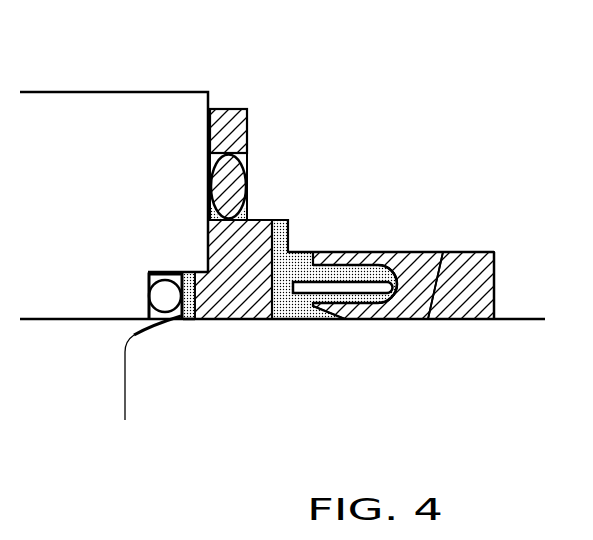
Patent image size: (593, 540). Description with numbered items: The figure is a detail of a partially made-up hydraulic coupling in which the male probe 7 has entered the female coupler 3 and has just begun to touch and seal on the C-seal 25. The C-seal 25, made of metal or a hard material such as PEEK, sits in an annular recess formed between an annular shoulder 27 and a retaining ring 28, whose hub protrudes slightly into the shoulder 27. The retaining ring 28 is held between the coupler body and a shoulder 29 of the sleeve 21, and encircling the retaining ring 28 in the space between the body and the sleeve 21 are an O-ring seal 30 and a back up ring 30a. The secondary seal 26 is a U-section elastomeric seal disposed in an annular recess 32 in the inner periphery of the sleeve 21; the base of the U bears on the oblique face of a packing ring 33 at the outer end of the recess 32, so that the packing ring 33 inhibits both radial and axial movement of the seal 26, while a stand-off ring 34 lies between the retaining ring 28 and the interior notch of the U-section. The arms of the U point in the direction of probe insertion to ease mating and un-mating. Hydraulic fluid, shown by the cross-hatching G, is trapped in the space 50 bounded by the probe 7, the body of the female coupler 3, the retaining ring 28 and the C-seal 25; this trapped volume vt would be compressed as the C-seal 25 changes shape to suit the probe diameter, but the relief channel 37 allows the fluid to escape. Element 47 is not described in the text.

The female coupler 3 is at (148, 102).
The male probe 7 is at (445, 362).
The sleeve 21 is at (416, 246).
The C-seal 25 is at (155, 273).
The secondary seal 26 is at (432, 253).
The annular shoulder 27 is at (150, 300).
The retaining ring 28 is at (260, 220).
The shoulder 29 is at (288, 218).
The O-ring seal 30 is at (210, 175).
The back up ring 30a is at (242, 127).
The annular recess 32 is at (482, 253).
The packing ring 33 is at (497, 290).
The stand-off ring 34 is at (363, 288).
The relief channel 37 is at (150, 328).
The elastic tongue 47 is at (332, 272).
The space 50 is at (188, 322).
The hydraulic fluid G is at (291, 322).
The trapped volume vt is at (183, 272).